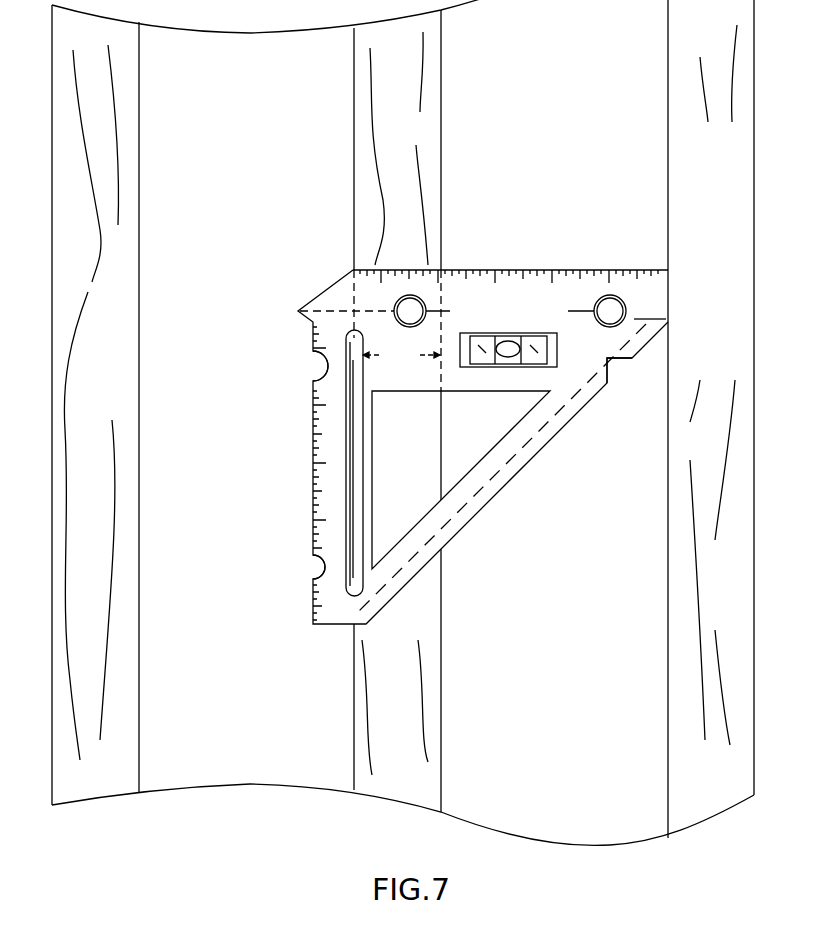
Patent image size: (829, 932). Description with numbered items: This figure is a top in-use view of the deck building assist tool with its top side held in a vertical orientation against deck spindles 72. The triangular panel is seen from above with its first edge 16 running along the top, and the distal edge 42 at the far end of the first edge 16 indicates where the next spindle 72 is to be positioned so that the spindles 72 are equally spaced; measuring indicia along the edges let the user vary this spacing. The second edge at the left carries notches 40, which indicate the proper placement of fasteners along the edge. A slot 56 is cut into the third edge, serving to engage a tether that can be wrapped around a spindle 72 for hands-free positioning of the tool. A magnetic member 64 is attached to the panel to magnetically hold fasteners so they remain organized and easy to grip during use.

The first edge 16 is at (465, 268).
The notches 40 is at (315, 383).
The distal edge 42 is at (668, 268).
The slots 56 is at (620, 365).
The magnetic member 64 is at (450, 473).
The spindles 72 is at (57, 258).